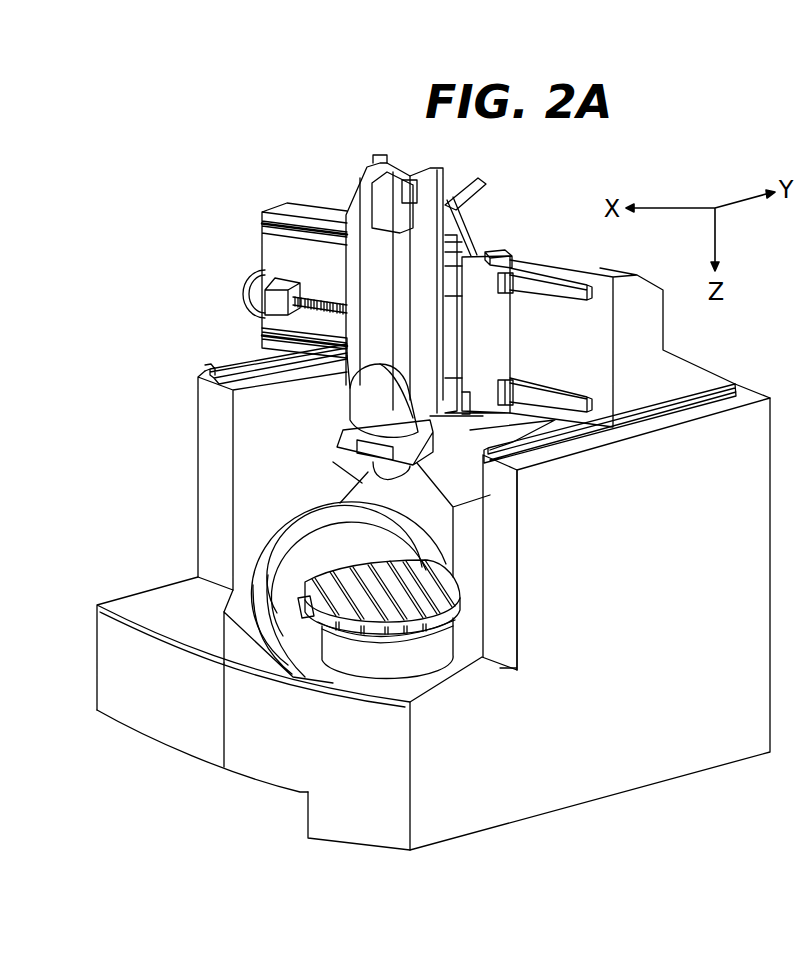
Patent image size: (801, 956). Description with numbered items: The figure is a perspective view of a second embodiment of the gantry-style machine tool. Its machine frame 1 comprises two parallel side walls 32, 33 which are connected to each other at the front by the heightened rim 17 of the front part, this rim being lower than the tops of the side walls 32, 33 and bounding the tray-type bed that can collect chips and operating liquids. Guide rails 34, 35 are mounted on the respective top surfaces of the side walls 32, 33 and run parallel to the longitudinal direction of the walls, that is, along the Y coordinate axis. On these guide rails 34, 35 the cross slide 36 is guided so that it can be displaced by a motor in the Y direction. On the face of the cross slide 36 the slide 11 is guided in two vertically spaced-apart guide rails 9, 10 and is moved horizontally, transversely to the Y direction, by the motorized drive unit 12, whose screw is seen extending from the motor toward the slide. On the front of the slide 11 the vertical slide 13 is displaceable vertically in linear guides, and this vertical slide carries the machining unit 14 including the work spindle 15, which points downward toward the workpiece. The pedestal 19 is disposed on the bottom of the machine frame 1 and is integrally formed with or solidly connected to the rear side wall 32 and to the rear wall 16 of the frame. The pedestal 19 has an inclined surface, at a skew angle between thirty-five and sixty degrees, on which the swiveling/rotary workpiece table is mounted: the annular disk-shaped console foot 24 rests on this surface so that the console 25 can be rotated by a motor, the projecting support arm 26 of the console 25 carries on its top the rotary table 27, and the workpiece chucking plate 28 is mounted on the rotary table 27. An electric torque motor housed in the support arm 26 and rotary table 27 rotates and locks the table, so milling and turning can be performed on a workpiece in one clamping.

The machine frame 1 is at (160, 441).
The guide rail 9 is at (262, 333).
The guide rail 10 is at (262, 228).
The slide 11 is at (501, 362).
The motorized drive unit 12 is at (265, 304).
The vertical slide 13 is at (363, 329).
The machining unit 14 is at (365, 421).
The work spindle 15 is at (383, 474).
The rear wall 16 is at (475, 516).
The heightened rim 17 is at (372, 784).
The pedestal 19 is at (247, 652).
The console foot 24 is at (268, 555).
The console 25 is at (328, 559).
The support arm 26 is at (335, 673).
The rotary table 27 is at (427, 648).
The workpiece chucking plate 28 is at (457, 600).
The side wall 32 is at (215, 497).
The side wall 33 is at (632, 616).
The guide rail 34 is at (205, 372).
The guide rail 35 is at (692, 415).
The cross slide 36 is at (581, 371).